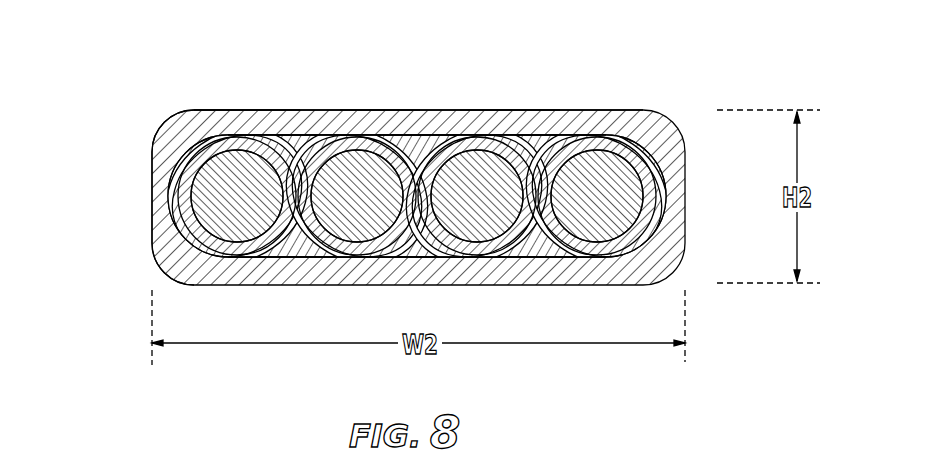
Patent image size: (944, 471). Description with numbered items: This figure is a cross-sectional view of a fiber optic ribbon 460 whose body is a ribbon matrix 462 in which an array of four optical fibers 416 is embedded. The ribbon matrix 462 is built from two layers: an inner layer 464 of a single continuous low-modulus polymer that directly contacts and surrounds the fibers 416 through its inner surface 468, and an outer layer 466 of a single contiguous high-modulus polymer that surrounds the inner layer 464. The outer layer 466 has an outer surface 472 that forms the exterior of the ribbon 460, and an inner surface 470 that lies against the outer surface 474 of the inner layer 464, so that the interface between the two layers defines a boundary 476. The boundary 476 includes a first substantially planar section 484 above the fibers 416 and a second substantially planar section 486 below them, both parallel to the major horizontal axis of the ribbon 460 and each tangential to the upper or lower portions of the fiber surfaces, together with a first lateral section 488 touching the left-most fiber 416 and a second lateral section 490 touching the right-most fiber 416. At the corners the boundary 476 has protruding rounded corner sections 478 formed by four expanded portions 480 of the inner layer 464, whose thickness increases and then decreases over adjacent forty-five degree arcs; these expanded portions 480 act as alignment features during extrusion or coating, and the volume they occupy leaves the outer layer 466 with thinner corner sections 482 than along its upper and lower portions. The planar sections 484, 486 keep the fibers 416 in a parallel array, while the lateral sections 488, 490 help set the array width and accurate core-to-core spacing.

The optical fibers 416 is at (242, 212).
The fiber optic ribbon 460 is at (741, 93).
The ribbon matrix 462 is at (100, 158).
The inner layer 464 is at (540, 147).
The outer layer 466 is at (423, 120).
The inner surface 468 is at (280, 260).
The inner surface 470 is at (285, 125).
The outer surface 472 is at (236, 100).
The outer surface 474 is at (300, 156).
The boundary 476 is at (385, 117).
The rounded corner sections 478 is at (198, 128).
The expanded portions 480 is at (177, 158).
The corner sections 482 is at (163, 117).
The first substantially planar section 484 is at (513, 125).
The second substantially planar section 486 is at (543, 256).
The first lateral section 488 is at (172, 192).
The second lateral section 490 is at (672, 196).